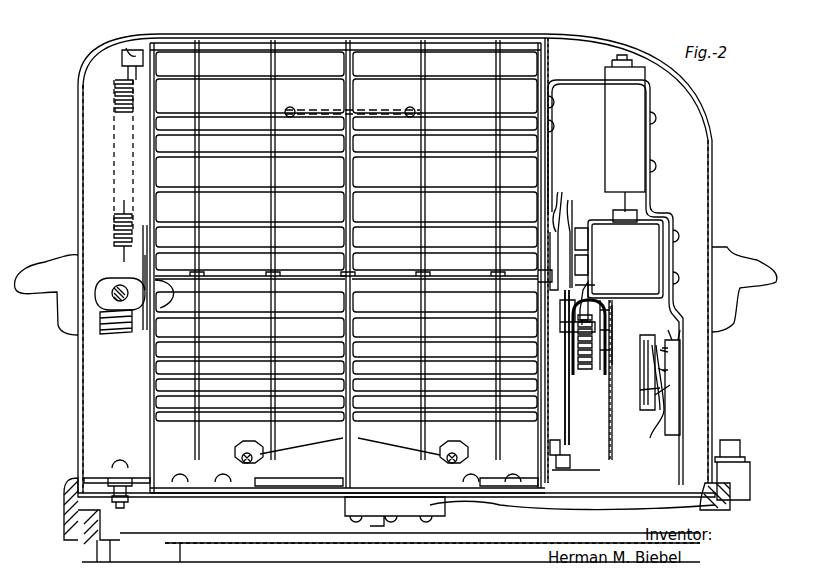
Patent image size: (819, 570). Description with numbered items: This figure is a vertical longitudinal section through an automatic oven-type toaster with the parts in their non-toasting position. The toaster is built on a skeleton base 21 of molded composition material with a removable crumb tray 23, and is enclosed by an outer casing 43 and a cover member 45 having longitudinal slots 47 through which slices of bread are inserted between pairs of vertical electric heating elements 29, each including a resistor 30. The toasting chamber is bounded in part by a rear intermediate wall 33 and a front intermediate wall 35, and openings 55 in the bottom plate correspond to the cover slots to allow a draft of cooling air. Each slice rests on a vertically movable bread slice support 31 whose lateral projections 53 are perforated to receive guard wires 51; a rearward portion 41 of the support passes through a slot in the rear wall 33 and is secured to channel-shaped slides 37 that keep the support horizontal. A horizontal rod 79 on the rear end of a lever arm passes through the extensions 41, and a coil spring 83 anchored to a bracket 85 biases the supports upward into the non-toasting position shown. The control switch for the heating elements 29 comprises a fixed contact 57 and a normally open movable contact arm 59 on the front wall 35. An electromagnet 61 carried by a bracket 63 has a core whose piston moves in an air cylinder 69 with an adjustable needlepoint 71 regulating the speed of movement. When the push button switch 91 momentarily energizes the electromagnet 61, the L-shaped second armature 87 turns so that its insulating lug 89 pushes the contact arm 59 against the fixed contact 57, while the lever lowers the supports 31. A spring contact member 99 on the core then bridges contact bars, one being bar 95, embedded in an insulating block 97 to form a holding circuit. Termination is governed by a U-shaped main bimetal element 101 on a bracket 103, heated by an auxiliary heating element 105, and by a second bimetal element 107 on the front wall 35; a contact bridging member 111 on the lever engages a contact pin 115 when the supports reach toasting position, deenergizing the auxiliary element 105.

The base 21 is at (76, 520).
The crumb tray 23 is at (210, 540).
The electric heating elements 29 is at (305, 90).
The resistor 30 is at (455, 190).
The bread slice support 31 is at (440, 276).
The rear intermediate wall 33 is at (148, 146).
The front intermediate wall 35 is at (548, 60).
The slides 37 is at (144, 330).
The portion of bread slice support 41 is at (108, 282).
The outer casing 43 is at (714, 182).
The cover member 45 is at (698, 97).
The slots 47 is at (483, 46).
The guard wires 51 is at (478, 92).
The lateral projections 53 is at (257, 276).
The openings 55 is at (455, 495).
The fixed contact 57 is at (557, 198).
The movable contact arm 59 is at (572, 215).
The electromagnet 61 is at (652, 264).
The bracket 63 is at (653, 160).
The air cylinder 69 is at (605, 118).
The adjustable needlepoint 71 is at (618, 58).
The horizontal rod 79 is at (118, 294).
The coil spring 83 is at (116, 217).
The bracket 85 is at (134, 70).
The second armature 87 is at (590, 300).
The lug 89 is at (590, 282).
The push button switch 91 is at (733, 440).
The contact bar 95 is at (672, 388).
The block 97 is at (682, 362).
The spring contact member 99 is at (662, 405).
The main bimetal element 101 is at (570, 408).
The bracket 103 is at (612, 450).
The auxiliary electric heating element 105 is at (592, 372).
The second bimetal element 107 is at (556, 450).
The contact bridging member 111 is at (116, 334).
The contact pin 115 is at (120, 470).